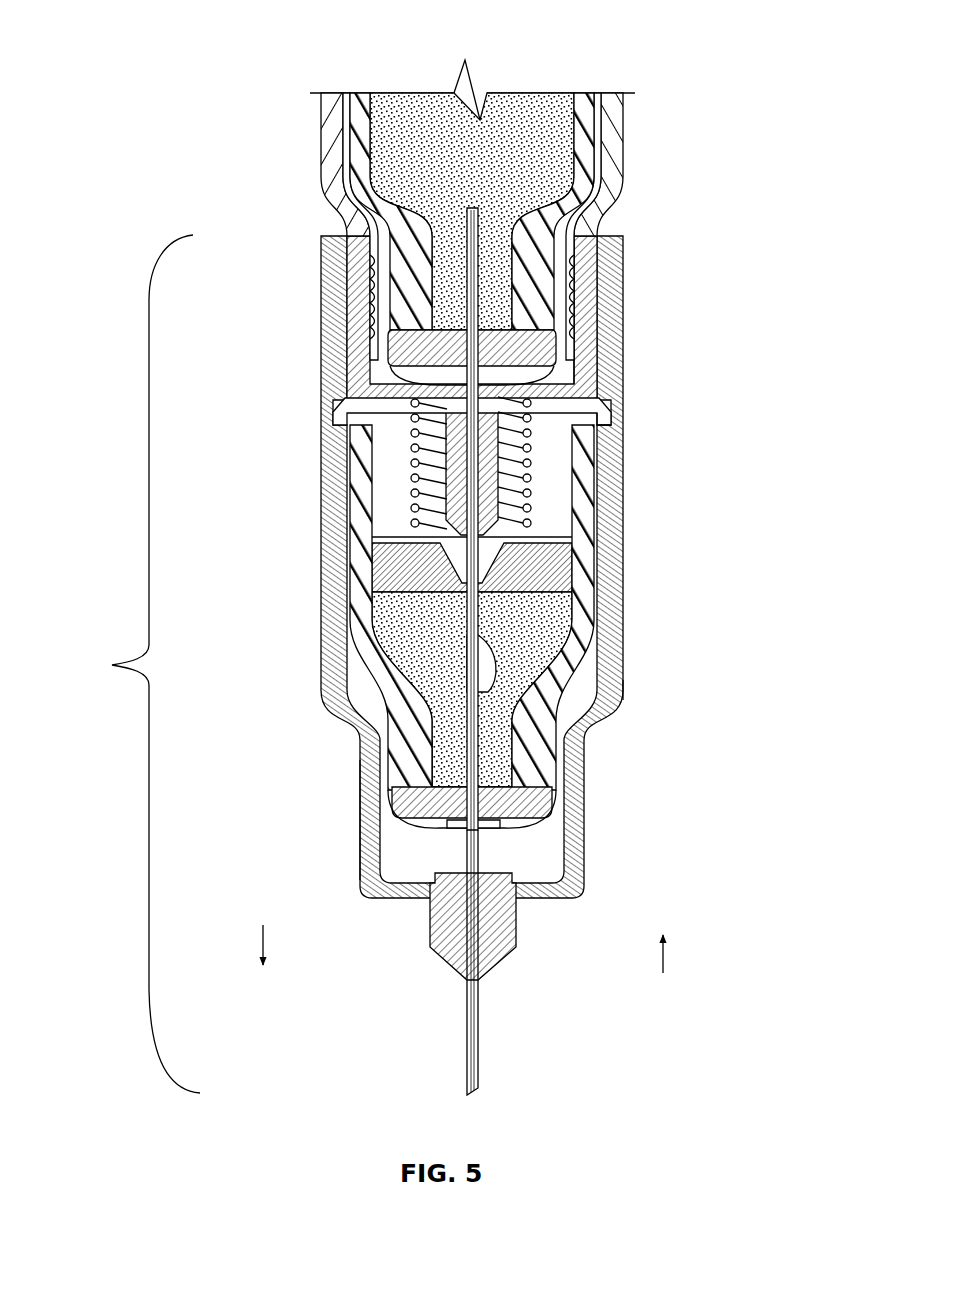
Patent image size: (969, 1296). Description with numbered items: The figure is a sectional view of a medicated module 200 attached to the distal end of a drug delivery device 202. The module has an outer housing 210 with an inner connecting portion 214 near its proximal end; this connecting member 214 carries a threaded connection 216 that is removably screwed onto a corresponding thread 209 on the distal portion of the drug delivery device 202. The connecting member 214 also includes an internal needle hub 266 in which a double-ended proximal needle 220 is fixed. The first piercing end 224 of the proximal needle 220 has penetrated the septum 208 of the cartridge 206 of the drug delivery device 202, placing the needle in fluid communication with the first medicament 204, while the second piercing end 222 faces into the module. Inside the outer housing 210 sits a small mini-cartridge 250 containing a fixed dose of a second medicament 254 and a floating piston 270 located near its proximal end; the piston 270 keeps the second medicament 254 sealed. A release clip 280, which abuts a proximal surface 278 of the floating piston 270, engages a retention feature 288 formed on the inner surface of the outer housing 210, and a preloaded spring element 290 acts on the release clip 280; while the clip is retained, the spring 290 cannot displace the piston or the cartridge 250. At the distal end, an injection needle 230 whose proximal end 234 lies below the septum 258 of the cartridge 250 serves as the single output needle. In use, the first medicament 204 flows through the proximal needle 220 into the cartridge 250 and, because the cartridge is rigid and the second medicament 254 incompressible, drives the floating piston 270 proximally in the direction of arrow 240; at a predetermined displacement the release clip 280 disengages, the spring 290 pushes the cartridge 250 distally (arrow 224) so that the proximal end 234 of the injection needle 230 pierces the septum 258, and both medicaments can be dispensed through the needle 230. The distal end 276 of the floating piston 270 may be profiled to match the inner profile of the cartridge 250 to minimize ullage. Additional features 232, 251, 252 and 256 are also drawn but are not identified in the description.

The medicated module 200 is at (112, 667).
The drug delivery device 202 is at (625, 100).
The first medicament 204 is at (550, 130).
The cartridge 206 is at (352, 126).
The septum 208 is at (520, 355).
The thread 209 is at (590, 316).
The outer housing 210 is at (626, 470).
The inner connecting portion 214 is at (340, 236).
The threaded connection 216 is at (370, 303).
The proximal needle 220 is at (482, 292).
The second piercing end 222 is at (575, 630).
The first piercing end 224 is at (258, 942).
The injection needle 230 is at (482, 1038).
The needle tip 232 is at (478, 1086).
The proximal end 234 is at (468, 831).
The arrow 240 is at (664, 956).
The mini-cartridge 250 is at (615, 690).
The housing lower portion 251 is at (355, 792).
The flange 252 is at (336, 410).
The second medicament 254 is at (494, 803).
The medicament 256 is at (497, 750).
The septum 258 is at (480, 824).
The internal needle hub 266 is at (392, 362).
The floating piston 270 is at (560, 572).
The distal end 276 is at (430, 590).
The proximal surface 278 is at (410, 548).
The release clip 280 is at (582, 516).
The retention feature 288 is at (604, 421).
The preloaded spring element 290 is at (535, 413).